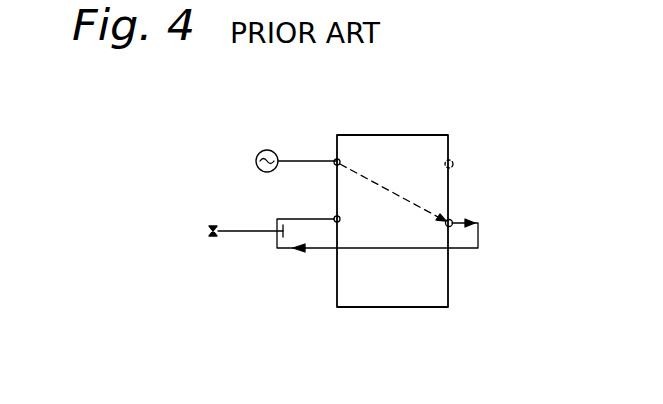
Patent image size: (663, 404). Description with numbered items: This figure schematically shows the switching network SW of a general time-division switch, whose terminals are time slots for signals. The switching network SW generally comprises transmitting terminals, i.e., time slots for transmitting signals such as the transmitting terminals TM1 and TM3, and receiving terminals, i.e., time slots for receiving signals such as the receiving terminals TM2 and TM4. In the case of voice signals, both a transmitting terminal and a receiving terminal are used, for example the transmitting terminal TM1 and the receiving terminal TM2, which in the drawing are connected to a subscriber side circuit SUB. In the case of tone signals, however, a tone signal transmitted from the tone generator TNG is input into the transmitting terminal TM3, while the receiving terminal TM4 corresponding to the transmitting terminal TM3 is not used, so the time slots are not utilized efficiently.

The switching network SW is at (412, 134).
The tone generator TNG is at (260, 153).
The transmitting terminal TM1 is at (334, 216).
The receiving terminal TM2 is at (456, 220).
The transmitting terminal TM3 is at (334, 158).
The receiving terminal TM4 is at (455, 162).
The subscriber line / current source SUB is at (332, 245).